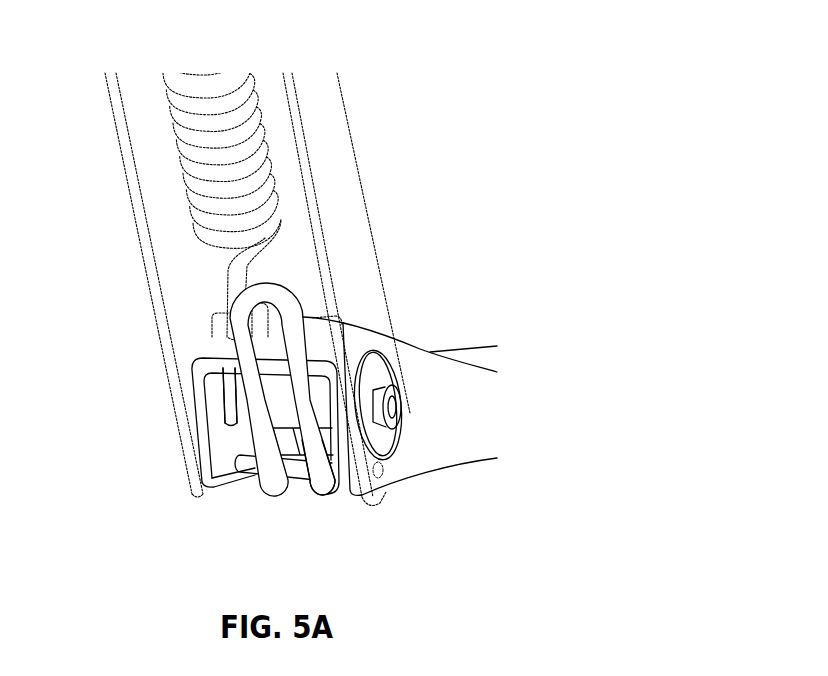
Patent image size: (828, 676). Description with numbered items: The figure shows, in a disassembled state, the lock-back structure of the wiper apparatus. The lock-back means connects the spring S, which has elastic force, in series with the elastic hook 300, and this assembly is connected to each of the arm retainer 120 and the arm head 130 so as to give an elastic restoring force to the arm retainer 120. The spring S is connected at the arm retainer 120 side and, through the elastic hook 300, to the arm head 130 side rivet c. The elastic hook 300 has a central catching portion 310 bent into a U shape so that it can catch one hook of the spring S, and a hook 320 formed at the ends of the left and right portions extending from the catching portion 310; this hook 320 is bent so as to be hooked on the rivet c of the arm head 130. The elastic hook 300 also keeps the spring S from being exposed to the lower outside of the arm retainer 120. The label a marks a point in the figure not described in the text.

The spring S is at (190, 175).
The arm retainer 120 is at (340, 186).
The arm head 130 is at (422, 370).
The elastic hook 300 is at (222, 331).
The catching portion 310 is at (277, 295).
The hook 320 is at (328, 490).
The contact point a is at (270, 400).
The rivet c is at (291, 468).